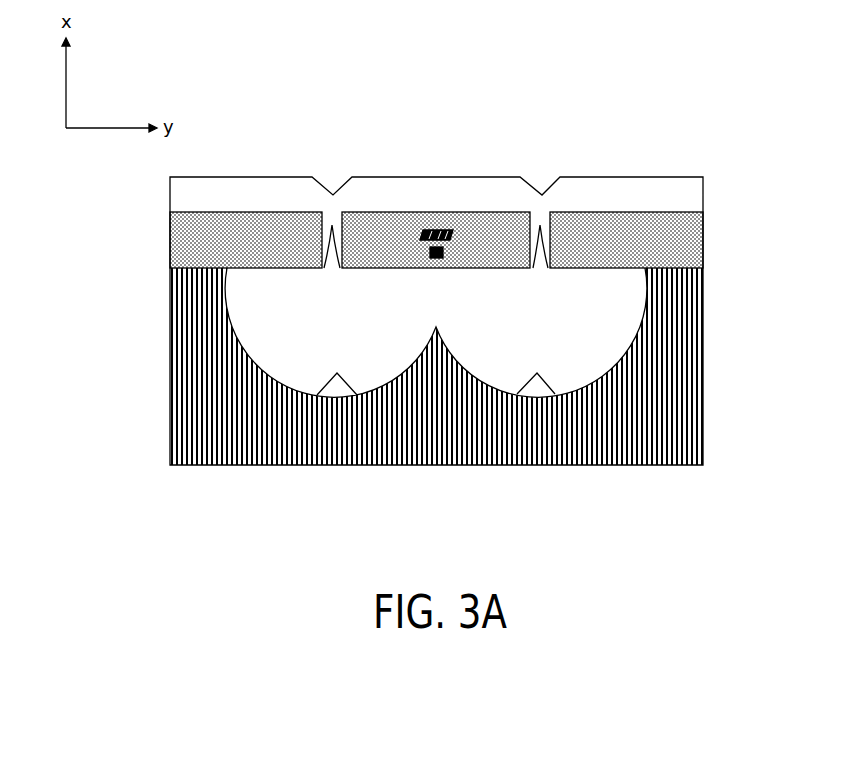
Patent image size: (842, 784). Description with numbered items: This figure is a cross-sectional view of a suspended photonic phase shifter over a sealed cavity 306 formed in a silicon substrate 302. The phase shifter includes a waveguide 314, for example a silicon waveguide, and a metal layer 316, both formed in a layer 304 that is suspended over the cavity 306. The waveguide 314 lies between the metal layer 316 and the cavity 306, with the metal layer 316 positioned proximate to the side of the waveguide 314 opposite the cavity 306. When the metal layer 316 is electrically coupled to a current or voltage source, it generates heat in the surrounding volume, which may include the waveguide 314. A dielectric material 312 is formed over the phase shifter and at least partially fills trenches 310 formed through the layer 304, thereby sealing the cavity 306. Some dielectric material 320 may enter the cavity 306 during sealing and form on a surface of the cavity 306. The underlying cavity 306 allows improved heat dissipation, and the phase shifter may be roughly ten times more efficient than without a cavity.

The silicon substrate 302 is at (677, 343).
The layer 304 is at (675, 245).
The sealed cavity 306 is at (293, 330).
The trenches 310 is at (330, 245).
The dielectric material 312 is at (677, 197).
The waveguide 314 is at (438, 258).
The metal layer 316 is at (442, 224).
The dielectric material 320 is at (543, 380).